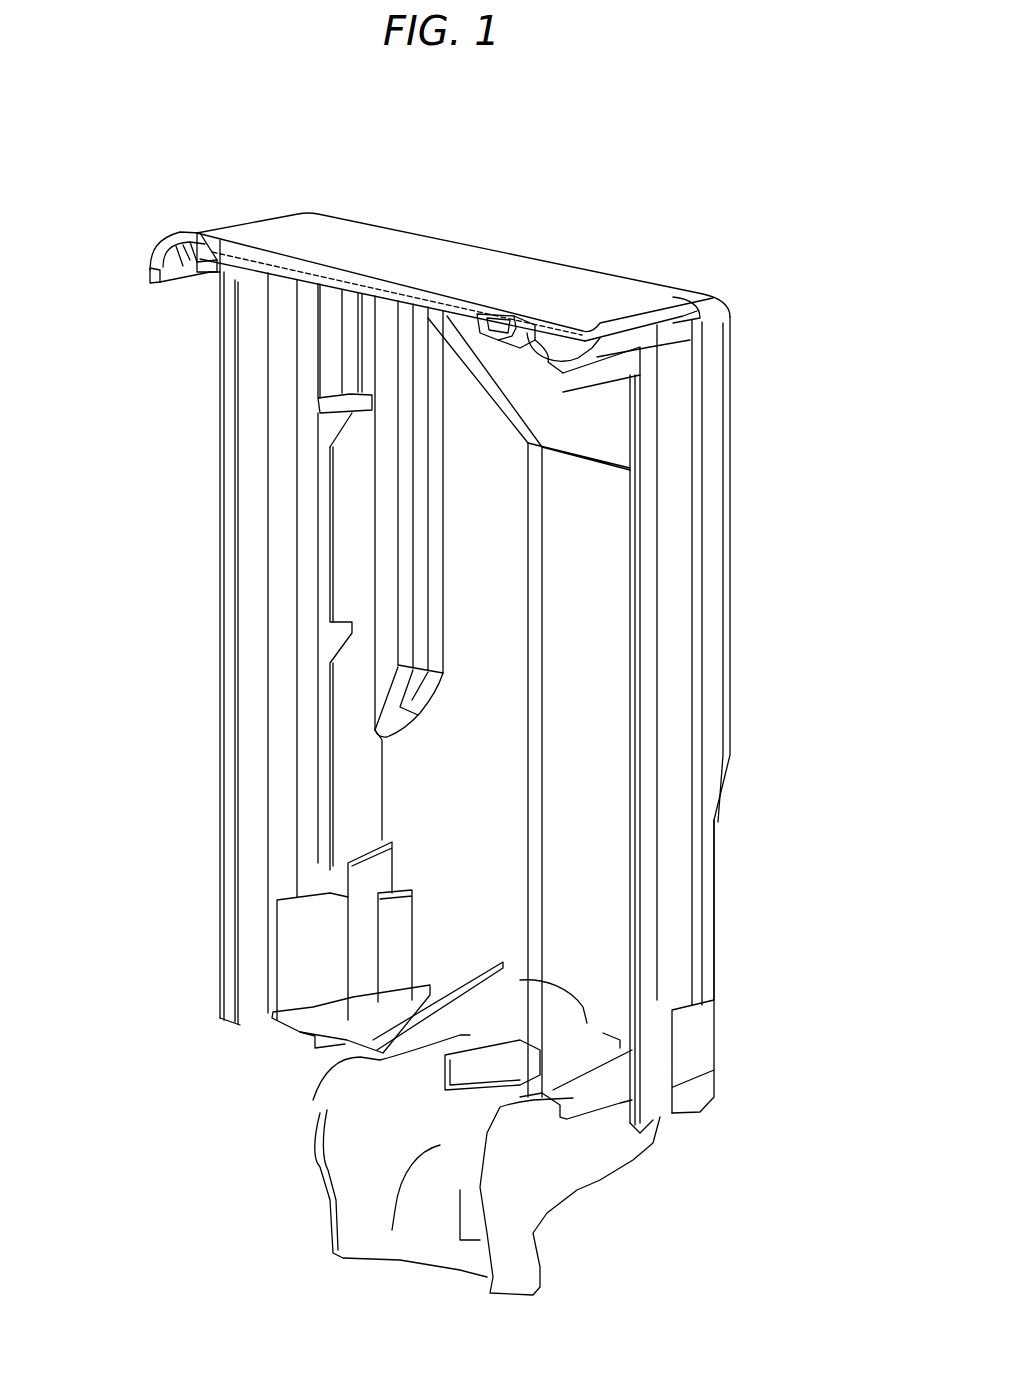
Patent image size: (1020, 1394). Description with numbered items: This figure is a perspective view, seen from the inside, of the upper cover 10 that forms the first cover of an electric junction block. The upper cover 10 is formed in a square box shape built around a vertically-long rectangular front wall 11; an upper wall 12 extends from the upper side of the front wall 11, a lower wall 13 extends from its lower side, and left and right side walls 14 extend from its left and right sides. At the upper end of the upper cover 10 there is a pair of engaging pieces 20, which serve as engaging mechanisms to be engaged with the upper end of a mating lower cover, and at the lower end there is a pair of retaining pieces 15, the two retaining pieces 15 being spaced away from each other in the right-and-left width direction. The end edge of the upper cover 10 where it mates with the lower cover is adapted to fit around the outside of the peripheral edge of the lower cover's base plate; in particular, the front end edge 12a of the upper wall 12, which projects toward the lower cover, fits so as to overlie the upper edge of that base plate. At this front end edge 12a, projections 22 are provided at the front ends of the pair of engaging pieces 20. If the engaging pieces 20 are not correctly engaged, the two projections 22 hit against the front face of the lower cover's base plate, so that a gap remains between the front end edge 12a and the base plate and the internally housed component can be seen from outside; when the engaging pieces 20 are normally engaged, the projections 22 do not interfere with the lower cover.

The upper cover 10 is at (672, 254).
The front wall 11 is at (600, 643).
The upper wall 12 is at (473, 275).
The front end edge 12a is at (372, 290).
The lower wall 13 is at (345, 1040).
The side walls 14 is at (255, 700).
The retaining pieces 15 is at (310, 1043).
The engaging pieces 20 is at (233, 293).
The projections 22 is at (212, 283).